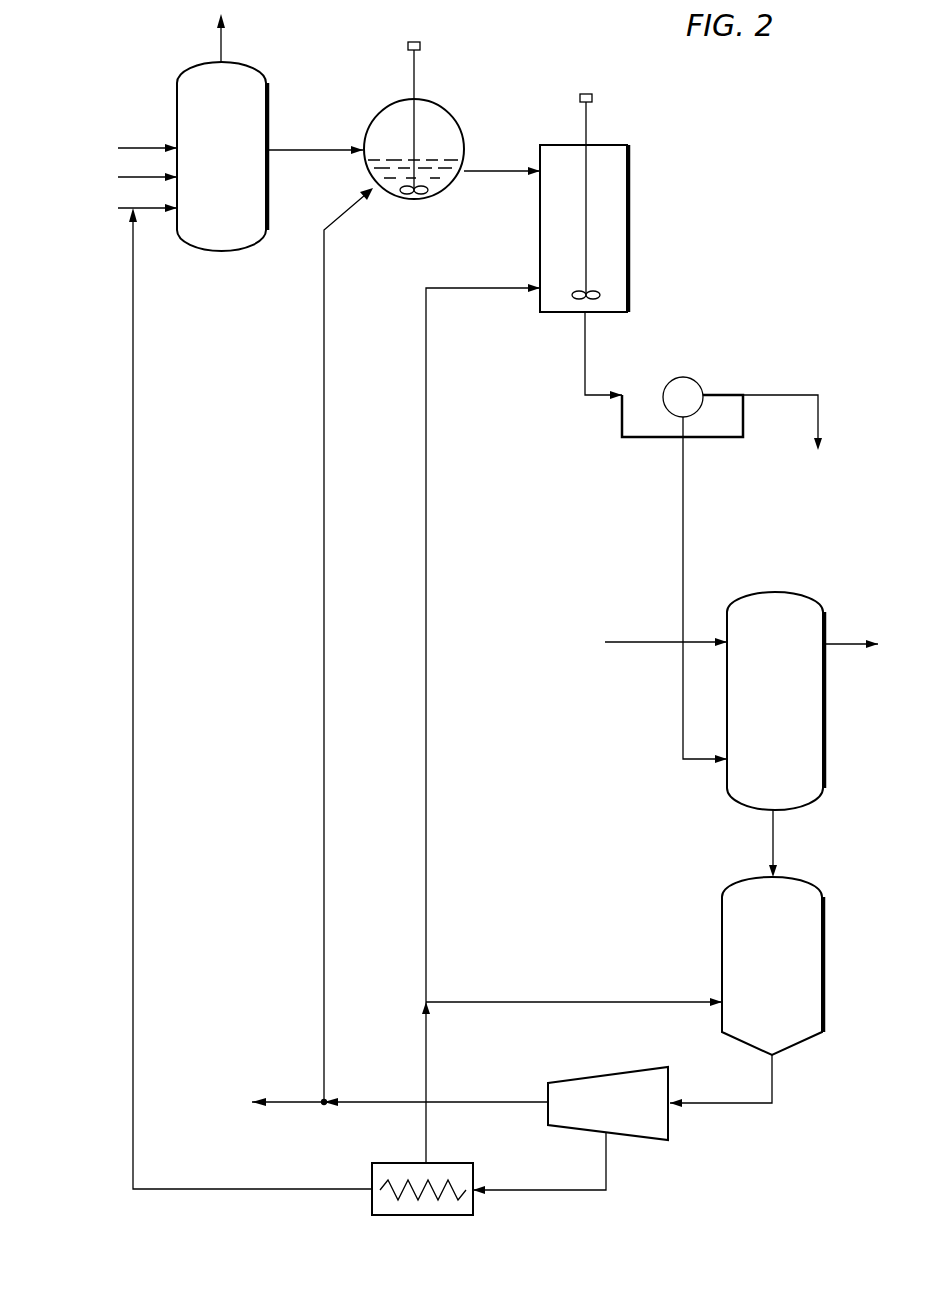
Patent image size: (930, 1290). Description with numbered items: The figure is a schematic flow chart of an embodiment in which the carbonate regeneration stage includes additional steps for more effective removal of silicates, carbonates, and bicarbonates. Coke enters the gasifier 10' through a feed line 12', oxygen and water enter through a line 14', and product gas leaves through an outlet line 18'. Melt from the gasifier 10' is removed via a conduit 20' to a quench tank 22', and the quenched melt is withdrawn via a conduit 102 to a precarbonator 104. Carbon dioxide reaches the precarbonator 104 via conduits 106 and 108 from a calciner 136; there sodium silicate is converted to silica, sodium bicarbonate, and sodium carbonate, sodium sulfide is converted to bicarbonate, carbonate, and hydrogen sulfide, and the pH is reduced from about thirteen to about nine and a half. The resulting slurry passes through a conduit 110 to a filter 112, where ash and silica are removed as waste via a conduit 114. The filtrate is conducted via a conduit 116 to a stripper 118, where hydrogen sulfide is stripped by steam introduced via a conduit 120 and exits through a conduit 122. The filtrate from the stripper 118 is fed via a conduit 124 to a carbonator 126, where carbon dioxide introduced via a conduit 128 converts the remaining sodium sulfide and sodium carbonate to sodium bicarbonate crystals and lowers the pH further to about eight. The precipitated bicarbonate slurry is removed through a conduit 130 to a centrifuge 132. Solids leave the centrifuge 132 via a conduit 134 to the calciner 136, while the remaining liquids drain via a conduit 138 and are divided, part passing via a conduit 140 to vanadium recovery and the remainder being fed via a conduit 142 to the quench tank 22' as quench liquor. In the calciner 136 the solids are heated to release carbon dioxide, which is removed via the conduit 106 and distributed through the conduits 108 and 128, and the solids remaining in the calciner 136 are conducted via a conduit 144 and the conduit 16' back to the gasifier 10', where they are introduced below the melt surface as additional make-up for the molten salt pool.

The gasifier 10' is at (214, 177).
The coke feed line 12' is at (121, 133).
The oxygen/steam feed line 14' is at (120, 170).
The conduit 16' is at (122, 232).
The gas outlet line 18' is at (235, 31).
The conduit 20' is at (314, 134).
The quench tank 22' is at (427, 149).
The conduit 102 is at (494, 171).
The precarbonator 104 is at (627, 184).
The conduit 106 is at (426, 1140).
The conduit 108 is at (426, 575).
The conduit 110 is at (585, 362).
The filter 112 is at (622, 433).
The conduit 114 is at (797, 385).
The conduit 116 is at (683, 502).
The stripper 118 is at (781, 726).
The conduit 120 is at (633, 642).
The conduit 122 is at (845, 646).
The conduit 124 is at (773, 843).
The carbonator 126 is at (776, 981).
The conduit 128 is at (598, 1002).
The conduit 130 is at (730, 1105).
The centrifuge 132 is at (611, 1116).
The conduit 134 is at (540, 1190).
The calciner 136 is at (372, 1208).
The conduit 138 is at (482, 1102).
The conduit 140 is at (298, 1104).
The conduit 142 is at (324, 592).
The conduit 144 is at (133, 592).